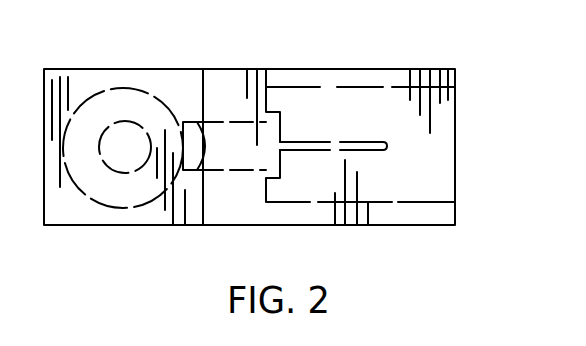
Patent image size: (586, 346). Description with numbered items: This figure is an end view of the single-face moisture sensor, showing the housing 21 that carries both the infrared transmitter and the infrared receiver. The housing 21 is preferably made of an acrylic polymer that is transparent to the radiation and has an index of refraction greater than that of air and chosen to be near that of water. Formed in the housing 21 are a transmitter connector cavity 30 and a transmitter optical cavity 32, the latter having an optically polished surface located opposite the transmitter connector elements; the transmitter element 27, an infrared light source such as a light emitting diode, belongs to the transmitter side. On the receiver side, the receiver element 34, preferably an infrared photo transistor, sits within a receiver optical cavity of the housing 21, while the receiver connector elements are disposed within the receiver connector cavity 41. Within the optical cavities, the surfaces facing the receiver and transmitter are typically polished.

The housing 21 is at (425, 69).
The transmitter element 27 is at (185, 128).
The transmitter connector cavity 30 is at (301, 88).
The transmitter optical cavity 32 is at (187, 158).
The receiver element 34 is at (112, 172).
The receiver connector cavity 41 is at (150, 96).